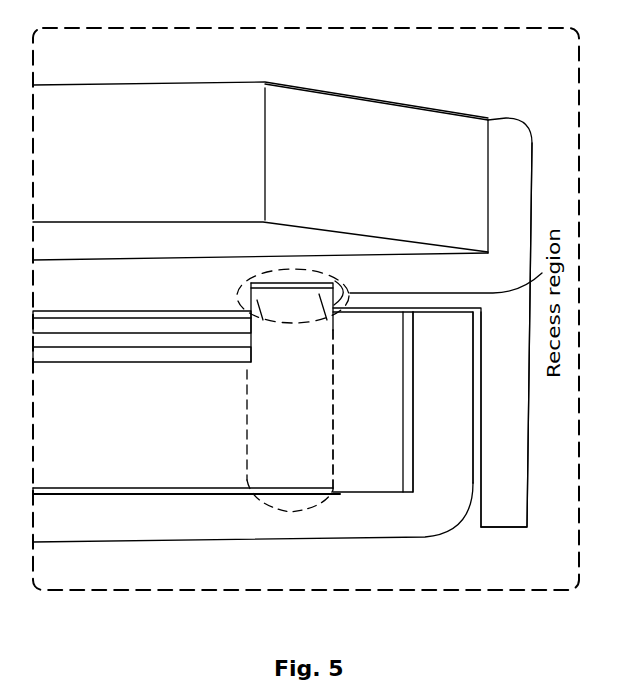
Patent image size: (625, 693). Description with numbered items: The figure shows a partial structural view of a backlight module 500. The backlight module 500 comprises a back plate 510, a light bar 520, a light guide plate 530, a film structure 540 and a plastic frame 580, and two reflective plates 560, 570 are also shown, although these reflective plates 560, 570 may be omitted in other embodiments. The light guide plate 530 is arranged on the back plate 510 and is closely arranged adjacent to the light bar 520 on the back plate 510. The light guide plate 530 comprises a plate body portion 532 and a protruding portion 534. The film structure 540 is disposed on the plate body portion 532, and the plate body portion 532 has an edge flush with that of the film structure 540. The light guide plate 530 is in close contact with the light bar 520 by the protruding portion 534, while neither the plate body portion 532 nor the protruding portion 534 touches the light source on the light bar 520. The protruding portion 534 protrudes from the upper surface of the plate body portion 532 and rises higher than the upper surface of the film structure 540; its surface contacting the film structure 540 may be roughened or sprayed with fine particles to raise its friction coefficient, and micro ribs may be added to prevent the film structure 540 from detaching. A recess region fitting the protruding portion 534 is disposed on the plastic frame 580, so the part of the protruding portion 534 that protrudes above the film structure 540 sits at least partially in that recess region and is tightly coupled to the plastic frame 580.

The backlight module 500 is at (98, 63).
The back plate 510 is at (433, 507).
The light bar 520 is at (365, 453).
The light guide plate 530 is at (259, 472).
The plate body portion 532 is at (107, 407).
The protruding portion 534 is at (287, 397).
The film structure 540 is at (175, 314).
The reflective plate 560 is at (52, 490).
The reflective plate 570 is at (410, 337).
The plastic frame 580 is at (513, 153).